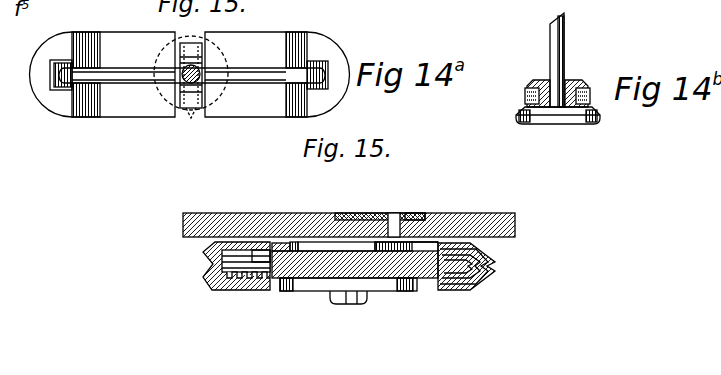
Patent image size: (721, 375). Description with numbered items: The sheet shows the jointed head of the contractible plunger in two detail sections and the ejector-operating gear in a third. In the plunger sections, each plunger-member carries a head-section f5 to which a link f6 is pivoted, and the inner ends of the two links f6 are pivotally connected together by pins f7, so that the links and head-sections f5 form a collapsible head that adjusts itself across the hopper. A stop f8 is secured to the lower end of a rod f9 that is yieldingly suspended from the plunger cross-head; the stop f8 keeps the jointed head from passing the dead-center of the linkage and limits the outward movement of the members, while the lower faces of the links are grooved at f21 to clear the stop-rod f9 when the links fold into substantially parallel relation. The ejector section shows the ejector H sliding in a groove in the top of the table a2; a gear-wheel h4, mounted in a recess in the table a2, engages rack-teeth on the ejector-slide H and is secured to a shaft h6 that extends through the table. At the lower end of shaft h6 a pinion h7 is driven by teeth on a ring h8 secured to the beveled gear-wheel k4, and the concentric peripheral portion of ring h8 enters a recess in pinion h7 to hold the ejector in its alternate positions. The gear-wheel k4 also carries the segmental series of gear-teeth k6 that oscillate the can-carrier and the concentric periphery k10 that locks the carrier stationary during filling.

In FIG. 14A, the head-section f5 is at (34, 72).
In FIG. 14A, the link f6 is at (149, 115).
In FIG. 14B, the link f6 is at (581, 83).
In FIG. 14A, the pin f7 is at (193, 109).
In FIG. 14B, the pin f7 is at (524, 97).
In FIG. 14A, the stop f8 is at (203, 113).
In FIG. 14B, the stop f8 is at (578, 120).
In FIG. 14B, the stop-rod f9 is at (561, 41).
In FIG. 14A, the groove f21 is at (120, 78).
In FIG. 15, the table a2 is at (484, 217).
In FIG. 15, the ejector H is at (352, 215).
In FIG. 15, the gear-wheel h4 is at (417, 215).
In FIG. 15, the shaft h6 is at (400, 214).
In FIG. 15, the pinion h7 is at (395, 283).
In FIG. 15, the ring h8 is at (320, 248).
In FIG. 15, the beveled gear-wheel k4 is at (232, 263).
In FIG. 15, the segmental series of gear-teeth k6 is at (490, 251).
In FIG. 15, the concentric periphery k10 is at (252, 247).